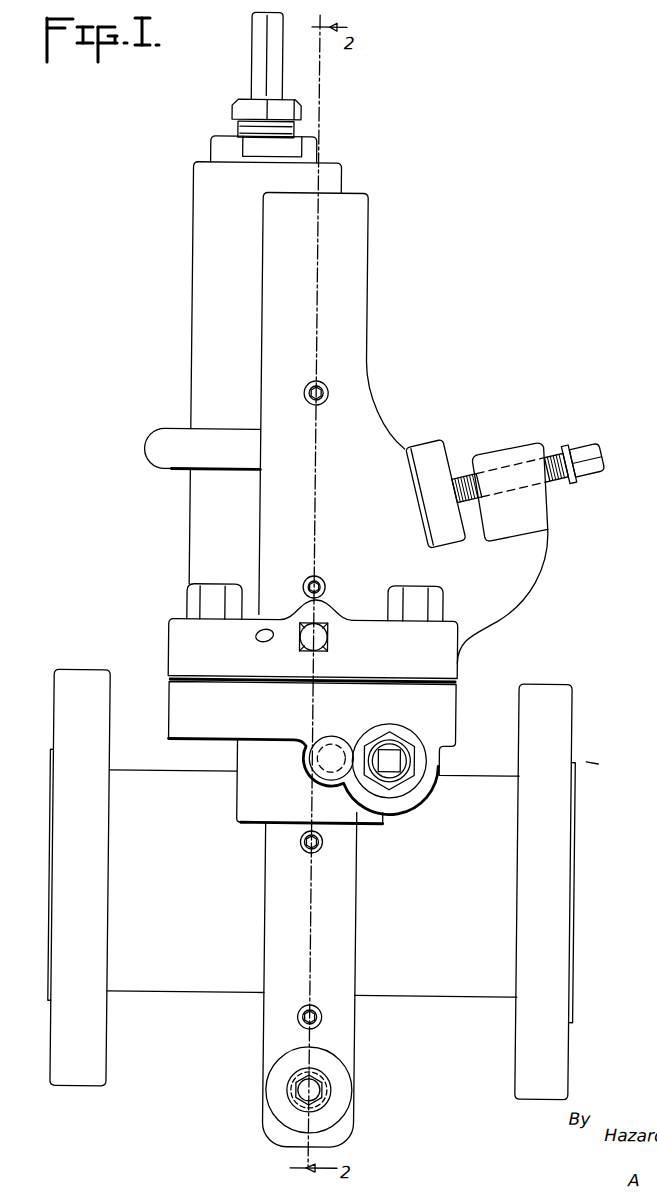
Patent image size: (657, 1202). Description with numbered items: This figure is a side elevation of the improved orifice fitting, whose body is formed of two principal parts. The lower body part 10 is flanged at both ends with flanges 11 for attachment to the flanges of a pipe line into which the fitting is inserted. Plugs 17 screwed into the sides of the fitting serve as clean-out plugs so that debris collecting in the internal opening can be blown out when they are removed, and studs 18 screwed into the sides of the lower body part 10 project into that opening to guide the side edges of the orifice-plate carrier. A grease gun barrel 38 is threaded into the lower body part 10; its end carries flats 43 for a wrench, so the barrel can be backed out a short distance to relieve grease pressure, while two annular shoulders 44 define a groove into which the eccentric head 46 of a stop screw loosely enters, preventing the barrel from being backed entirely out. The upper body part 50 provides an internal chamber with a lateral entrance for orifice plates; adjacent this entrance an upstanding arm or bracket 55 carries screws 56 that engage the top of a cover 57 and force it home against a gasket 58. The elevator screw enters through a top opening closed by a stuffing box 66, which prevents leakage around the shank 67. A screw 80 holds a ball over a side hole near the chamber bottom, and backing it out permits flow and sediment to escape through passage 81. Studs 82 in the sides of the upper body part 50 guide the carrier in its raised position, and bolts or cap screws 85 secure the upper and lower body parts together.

The lower body part 10 is at (497, 888).
The flanges 11 is at (73, 688).
The plugs 17 is at (308, 1093).
The studs 18 is at (303, 842).
The barrel 38 is at (397, 734).
The flats 43 is at (400, 743).
The annular shoulders 44 is at (424, 748).
The eccentric head 46 is at (334, 742).
The upper body part 50 is at (356, 422).
The arm or bracket 55 is at (531, 505).
The screws 56 is at (538, 453).
The cover 57 is at (438, 461).
The gasket 58 is at (405, 449).
The stuffing box 66 is at (234, 134).
The shank 67 is at (258, 89).
The screw 80 is at (321, 633).
The passage 81 is at (262, 643).
The studs 82 is at (322, 386).
The bolts or cap screws 85 is at (192, 603).